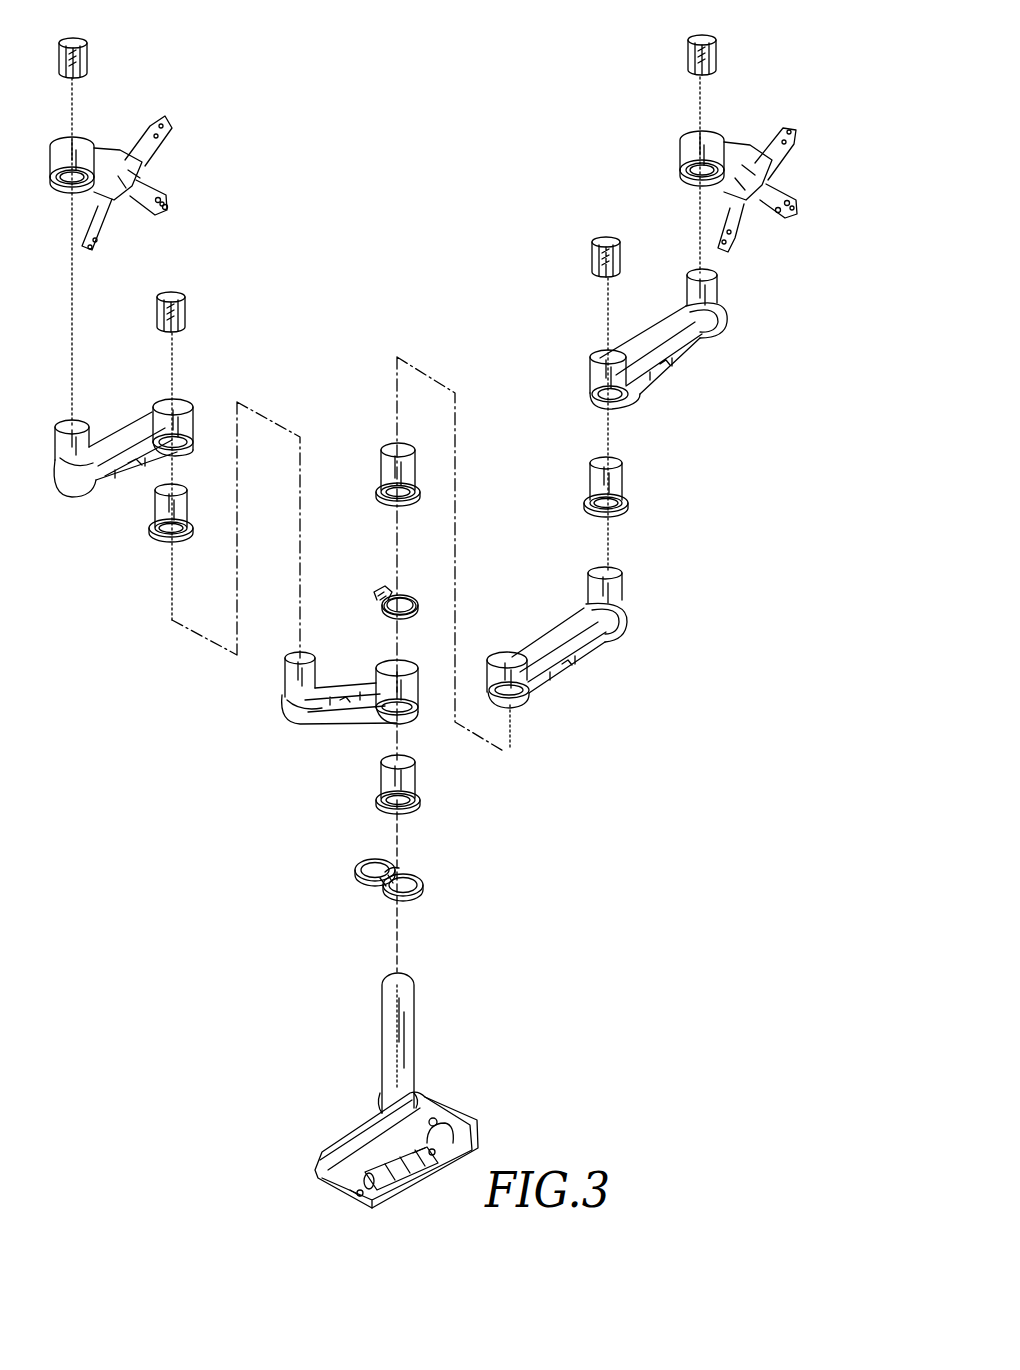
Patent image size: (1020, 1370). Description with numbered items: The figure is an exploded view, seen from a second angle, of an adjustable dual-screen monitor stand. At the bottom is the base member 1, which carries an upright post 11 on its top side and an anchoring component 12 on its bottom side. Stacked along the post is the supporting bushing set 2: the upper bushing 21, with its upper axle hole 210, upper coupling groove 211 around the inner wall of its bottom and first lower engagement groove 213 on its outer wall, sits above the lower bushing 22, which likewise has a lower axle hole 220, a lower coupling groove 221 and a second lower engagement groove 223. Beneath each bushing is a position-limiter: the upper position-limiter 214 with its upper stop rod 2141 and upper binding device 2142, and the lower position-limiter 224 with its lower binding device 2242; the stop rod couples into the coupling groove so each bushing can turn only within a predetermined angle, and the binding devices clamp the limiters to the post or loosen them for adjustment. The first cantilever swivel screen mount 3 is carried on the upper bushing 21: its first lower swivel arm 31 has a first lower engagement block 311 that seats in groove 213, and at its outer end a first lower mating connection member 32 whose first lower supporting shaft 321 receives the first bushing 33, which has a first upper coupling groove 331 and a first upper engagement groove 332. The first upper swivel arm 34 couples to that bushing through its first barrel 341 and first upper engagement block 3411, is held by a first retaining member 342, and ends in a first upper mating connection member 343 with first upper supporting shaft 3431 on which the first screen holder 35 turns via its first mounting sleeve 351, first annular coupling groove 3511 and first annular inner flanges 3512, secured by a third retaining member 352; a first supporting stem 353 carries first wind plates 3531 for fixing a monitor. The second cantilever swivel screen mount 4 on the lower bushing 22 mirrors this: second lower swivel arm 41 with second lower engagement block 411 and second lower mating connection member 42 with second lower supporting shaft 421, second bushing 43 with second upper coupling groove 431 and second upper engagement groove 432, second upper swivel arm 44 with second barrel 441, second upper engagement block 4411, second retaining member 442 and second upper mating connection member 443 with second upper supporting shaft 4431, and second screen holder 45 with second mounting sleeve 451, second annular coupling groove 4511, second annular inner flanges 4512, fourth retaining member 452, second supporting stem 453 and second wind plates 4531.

The base member 1 is at (345, 1143).
The upright post 11 is at (392, 1023).
The anchoring component 12 is at (453, 1128).
The supporting bushing set 2 is at (340, 420).
The upper bushing 21 is at (383, 458).
The upper axle hole 210 is at (415, 488).
The upper coupling groove 211 is at (410, 500).
The first lower engagement groove 213 is at (378, 490).
The upper position-limiter 214 is at (415, 598).
The upper stop rod 2141 is at (384, 609).
The upper binding device 2142 is at (378, 592).
The lower bushing 22 is at (410, 775).
The lower axle hole 220 is at (380, 806).
The lower coupling groove 221 is at (412, 808).
The second lower engagement groove 223 is at (415, 799).
The lower position-limiter 224 is at (418, 896).
The lower binding device 2242 is at (405, 868).
The first cantilever swivel screen mount 3 is at (550, 635).
The first lower swivel arm 31 is at (525, 702).
The first lower engagement block 311 is at (500, 660).
The first lower mating connection member 32 is at (632, 578).
The first lower supporting shaft 321 is at (627, 590).
The first bushing 33 is at (590, 471).
The first upper coupling groove 331 is at (620, 515).
The first upper engagement groove 332 is at (588, 504).
The first upper swivel arm 34 is at (648, 335).
The first barrel 341 is at (592, 365).
The first upper engagement block 3411 is at (592, 402).
The first retaining member 342 is at (592, 252).
The first upper mating connection member 343 is at (728, 318).
The first upper supporting shaft 3431 is at (720, 282).
The first screen holder 35 is at (682, 80).
The first mounting sleeve 351 is at (682, 150).
The first annular coupling groove 3511 is at (683, 175).
The first annular inner flanges 3512 is at (692, 181).
The third retaining member 352 is at (690, 50).
The first supporting stem 353 is at (735, 158).
The first wind plates 3531 is at (775, 218).
The second cantilever swivel screen mount 4 is at (350, 690).
The second lower swivel arm 41 is at (370, 714).
The second lower engagement block 411 is at (405, 677).
The second lower mating connection member 42 is at (278, 687).
The second lower supporting shaft 421 is at (290, 672).
The second bushing 43 is at (158, 506).
The second upper coupling groove 431 is at (152, 533).
The second upper engagement groove 432 is at (182, 538).
The second upper swivel arm 44 is at (140, 440).
The second barrel 441 is at (190, 408).
The second upper engagement block 4411 is at (192, 450).
The second retaining member 442 is at (188, 297).
The second upper mating connection member 443 is at (60, 425).
The second upper supporting shaft 4431 is at (83, 428).
The second screen holder 45 is at (115, 78).
The second mounting sleeve 451 is at (80, 150).
The second annular coupling groove 4511 is at (55, 172).
The second annular inner flanges 4512 is at (62, 184).
The fourth retaining member 452 is at (90, 50).
The second supporting stem 453 is at (112, 168).
The second wind plates 4531 is at (160, 200).